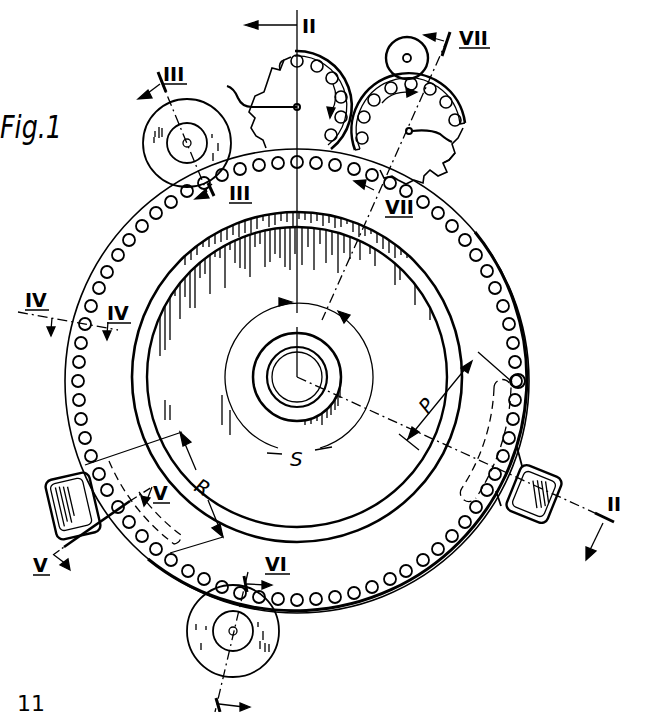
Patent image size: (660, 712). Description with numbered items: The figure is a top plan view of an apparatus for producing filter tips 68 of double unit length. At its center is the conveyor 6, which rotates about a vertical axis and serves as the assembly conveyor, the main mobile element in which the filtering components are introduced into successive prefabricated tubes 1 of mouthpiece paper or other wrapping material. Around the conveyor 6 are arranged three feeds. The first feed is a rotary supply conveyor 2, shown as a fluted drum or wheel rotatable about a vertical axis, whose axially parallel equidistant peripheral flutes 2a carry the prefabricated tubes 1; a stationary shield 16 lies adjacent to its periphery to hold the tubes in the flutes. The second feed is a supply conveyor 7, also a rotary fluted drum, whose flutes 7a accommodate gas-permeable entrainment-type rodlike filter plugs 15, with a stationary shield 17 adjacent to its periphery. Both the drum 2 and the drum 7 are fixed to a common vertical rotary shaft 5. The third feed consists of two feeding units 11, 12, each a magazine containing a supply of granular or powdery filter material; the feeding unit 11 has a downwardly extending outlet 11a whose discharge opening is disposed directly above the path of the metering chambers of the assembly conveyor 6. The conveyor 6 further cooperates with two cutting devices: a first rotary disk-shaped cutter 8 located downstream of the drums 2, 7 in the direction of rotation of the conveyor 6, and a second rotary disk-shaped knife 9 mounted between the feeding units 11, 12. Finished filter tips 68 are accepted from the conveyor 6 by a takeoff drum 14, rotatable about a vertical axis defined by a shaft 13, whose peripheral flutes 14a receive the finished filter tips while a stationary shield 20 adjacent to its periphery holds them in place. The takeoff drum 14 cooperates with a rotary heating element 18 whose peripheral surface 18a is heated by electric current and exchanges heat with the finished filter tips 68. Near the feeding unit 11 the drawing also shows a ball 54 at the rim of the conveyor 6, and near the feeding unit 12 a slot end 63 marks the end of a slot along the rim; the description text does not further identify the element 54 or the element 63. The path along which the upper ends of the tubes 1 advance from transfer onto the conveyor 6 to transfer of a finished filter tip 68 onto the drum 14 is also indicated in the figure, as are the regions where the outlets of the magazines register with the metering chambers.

The prefabricated tube 1 is at (250, 106).
The rotary supply conveyor 2 is at (259, 92).
The peripheral flutes 2a is at (262, 98).
The vertical rotary shaft 5 is at (255, 85).
The conveyor 6 is at (522, 312).
The supply conveyor 7 is at (291, 60).
The peripheral flutes 7a is at (290, 60).
The first rotary disk-shaped cutter 8 is at (144, 138).
The second rotary disk-shaped knife 9 is at (262, 668).
The feeding unit 11 is at (541, 527).
The outlet 11a is at (516, 421).
The feeding unit 12 is at (46, 520).
The shaft 13 is at (454, 141).
The takeoff conveyor drum 14 is at (452, 170).
The peripheral flutes 14a is at (455, 160).
The filter plug 15 is at (323, 54).
The stationary shield 16 is at (335, 61).
The stationary shield 17 is at (347, 95).
The rotary heating element 18 is at (437, 84).
The peripheral surface 18a is at (394, 36).
The stationary shield 20 is at (462, 118).
The ball 54 is at (530, 382).
The slot end 63 is at (176, 546).
The filter tip 68 is at (451, 103).